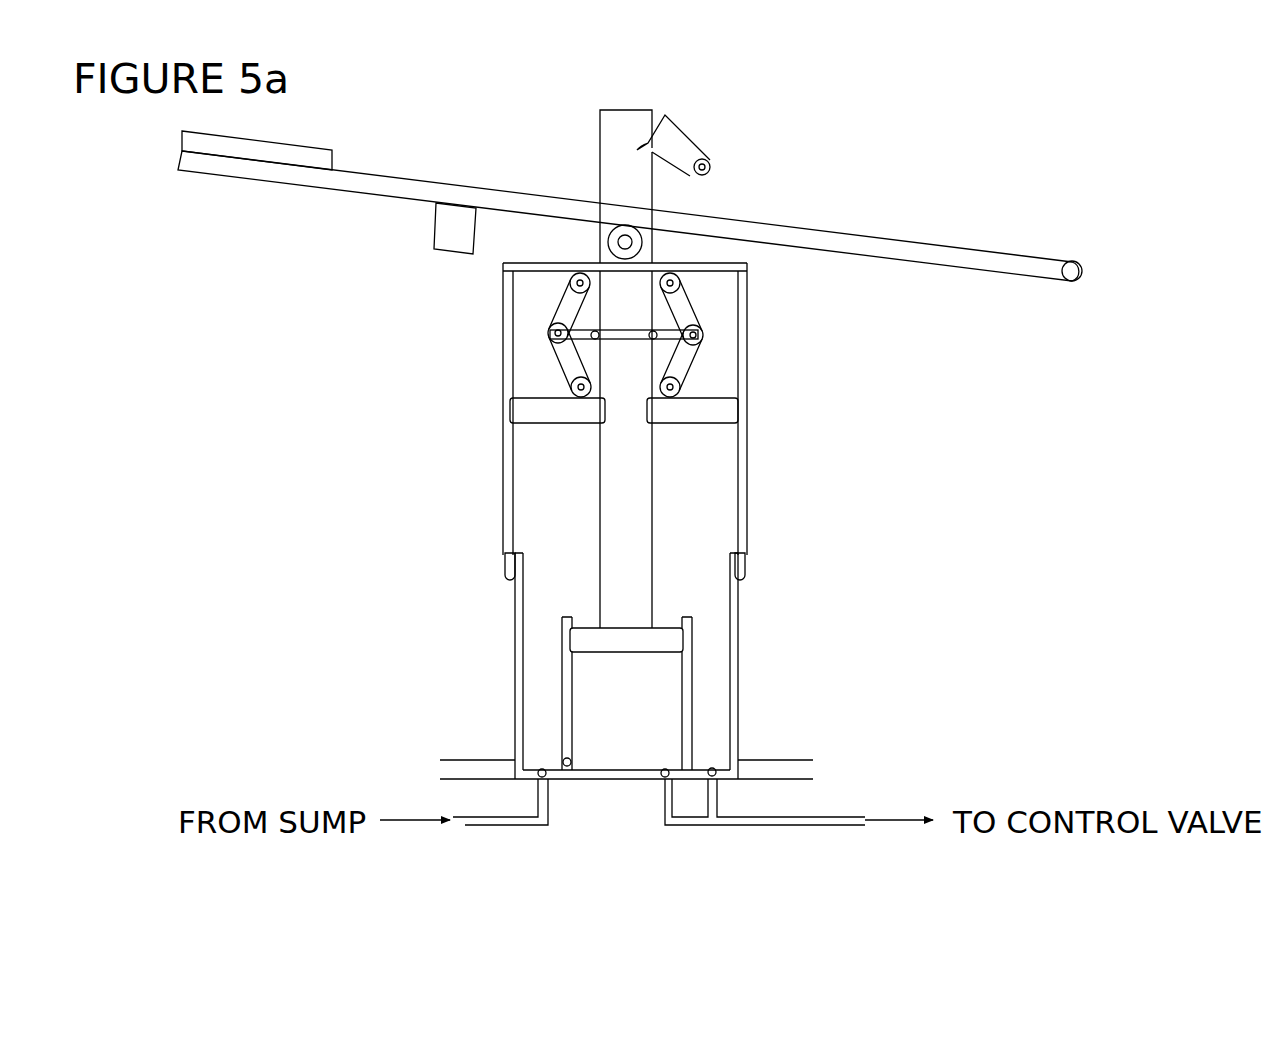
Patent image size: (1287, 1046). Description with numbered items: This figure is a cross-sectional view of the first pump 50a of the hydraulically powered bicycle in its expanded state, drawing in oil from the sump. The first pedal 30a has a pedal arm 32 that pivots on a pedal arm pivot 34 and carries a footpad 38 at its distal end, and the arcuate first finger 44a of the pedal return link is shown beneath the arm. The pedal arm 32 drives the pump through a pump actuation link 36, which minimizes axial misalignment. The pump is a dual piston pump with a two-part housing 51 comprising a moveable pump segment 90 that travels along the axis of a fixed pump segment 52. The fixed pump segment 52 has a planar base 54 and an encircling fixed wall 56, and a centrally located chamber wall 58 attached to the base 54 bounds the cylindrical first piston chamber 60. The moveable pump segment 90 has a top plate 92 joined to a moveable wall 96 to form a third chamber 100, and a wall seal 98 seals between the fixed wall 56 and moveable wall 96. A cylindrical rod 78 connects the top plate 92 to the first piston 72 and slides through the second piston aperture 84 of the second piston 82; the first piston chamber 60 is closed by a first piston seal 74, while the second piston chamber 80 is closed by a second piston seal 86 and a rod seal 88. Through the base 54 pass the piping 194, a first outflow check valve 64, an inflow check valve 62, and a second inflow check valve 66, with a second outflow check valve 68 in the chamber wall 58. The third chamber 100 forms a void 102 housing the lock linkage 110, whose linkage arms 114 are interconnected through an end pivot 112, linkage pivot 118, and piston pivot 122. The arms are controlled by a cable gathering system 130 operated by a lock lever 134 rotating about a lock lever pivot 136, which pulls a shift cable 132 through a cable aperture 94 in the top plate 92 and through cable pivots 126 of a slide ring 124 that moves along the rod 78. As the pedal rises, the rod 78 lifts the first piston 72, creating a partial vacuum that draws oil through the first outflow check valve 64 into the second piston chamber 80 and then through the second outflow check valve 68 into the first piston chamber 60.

The first pedal 30a is at (975, 205).
The pedal arm 32 is at (325, 182).
The pedal arm pivot 34 is at (1078, 265).
The pump actuation link 36 is at (622, 238).
The footpad 38 is at (243, 150).
The first finger 44a is at (437, 224).
The first pump 50a is at (300, 420).
The two-part housing 51 is at (827, 485).
The fixed pump segment 52 is at (740, 665).
The planar base 54 is at (748, 760).
The fixed wall 56 is at (520, 662).
The chamber wall 58 is at (565, 716).
The first piston chamber 60 is at (650, 740).
The inflow check valve 62 is at (717, 790).
The first outflow check valve 64 is at (548, 790).
The second inflow check valve 66 is at (665, 785).
The second outflow check valve 68 is at (563, 760).
The first piston 72 is at (668, 642).
The first piston seal 74 is at (568, 632).
The cylindrical rod 78 is at (620, 558).
The second piston chamber 80 is at (745, 565).
The second piston 82 is at (715, 410).
The second piston aperture 84 is at (598, 420).
The second piston seal 86 is at (510, 407).
The rod seal 88 is at (655, 415).
The moveable pump segment 90 is at (503, 378).
The top plate 92 is at (723, 260).
The cable aperture 94 is at (600, 263).
The moveable wall 96 is at (750, 445).
The wall seal 98 is at (508, 560).
The third chamber 100 is at (708, 353).
The void 102 is at (523, 360).
The lock linkage 110 is at (797, 322).
The end pivot 112 is at (673, 285).
The linkage arms 114 is at (562, 313).
The linkage pivot 118 is at (552, 332).
The piston pivot 122 is at (575, 388).
The slide ring 124 is at (677, 307).
The cable pivots 126 is at (700, 333).
The cable gathering system 130 is at (593, 97).
The shift cable 132 is at (600, 200).
The lock lever 134 is at (690, 133).
The lock lever pivot 136 is at (710, 160).
The piping 194 is at (227, 802).